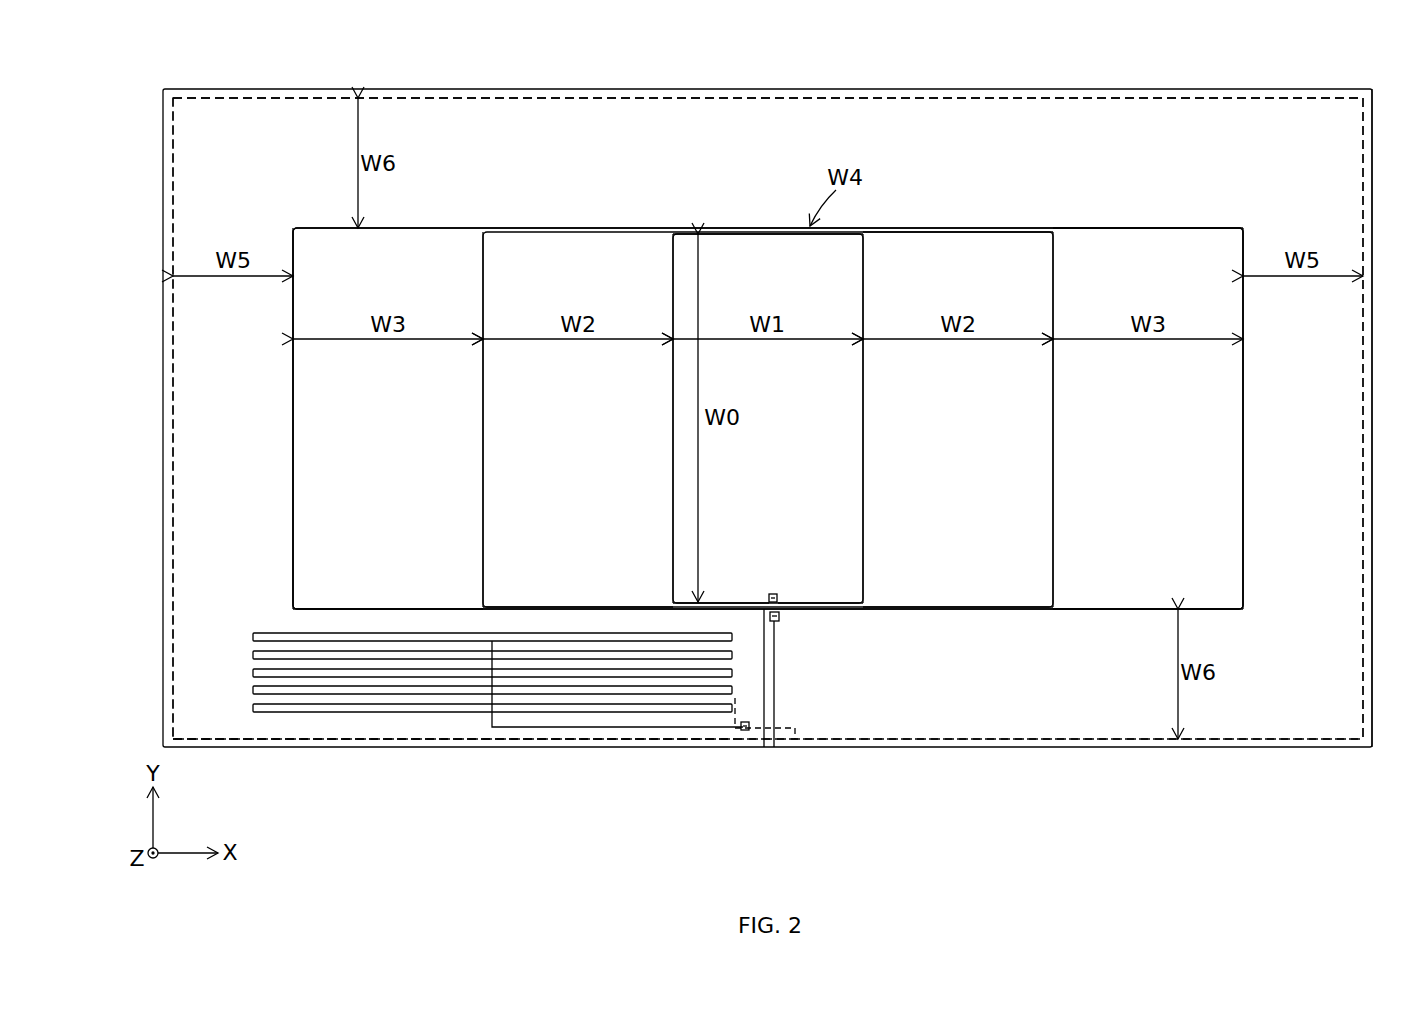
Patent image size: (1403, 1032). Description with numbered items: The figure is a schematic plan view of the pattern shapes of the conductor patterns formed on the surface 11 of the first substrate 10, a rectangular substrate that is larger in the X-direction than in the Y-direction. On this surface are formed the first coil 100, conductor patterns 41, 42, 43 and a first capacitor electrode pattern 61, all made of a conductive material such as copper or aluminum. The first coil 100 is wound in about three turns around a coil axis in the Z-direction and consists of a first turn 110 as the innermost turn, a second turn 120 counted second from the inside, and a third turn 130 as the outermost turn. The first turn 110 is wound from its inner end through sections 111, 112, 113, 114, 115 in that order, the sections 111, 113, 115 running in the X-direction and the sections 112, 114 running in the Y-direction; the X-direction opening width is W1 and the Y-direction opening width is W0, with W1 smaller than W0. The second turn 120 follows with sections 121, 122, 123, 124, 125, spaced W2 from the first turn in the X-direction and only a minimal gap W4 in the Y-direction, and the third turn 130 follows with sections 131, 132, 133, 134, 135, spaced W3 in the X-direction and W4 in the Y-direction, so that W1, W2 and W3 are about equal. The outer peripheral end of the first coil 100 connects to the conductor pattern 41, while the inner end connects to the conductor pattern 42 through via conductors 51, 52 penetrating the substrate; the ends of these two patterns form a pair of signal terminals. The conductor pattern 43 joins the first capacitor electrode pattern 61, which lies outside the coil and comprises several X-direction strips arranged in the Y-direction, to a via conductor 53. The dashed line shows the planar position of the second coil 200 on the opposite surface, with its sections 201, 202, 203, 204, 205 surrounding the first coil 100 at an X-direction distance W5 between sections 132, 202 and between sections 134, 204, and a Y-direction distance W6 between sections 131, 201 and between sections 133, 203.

The first substrate 10 is at (1347, 85).
The surface of the first substrate 11 is at (1250, 106).
The conductor pattern 41 is at (766, 662).
The conductor pattern 42 is at (776, 692).
The conductor pattern 43 is at (595, 728).
The via conductor 51 is at (773, 593).
The via conductor 52 is at (780, 618).
The via conductor 53 is at (745, 731).
The first capacitor electrode pattern 61 is at (249, 630).
The first coil 100 is at (1134, 184).
The first turn 110 is at (868, 491).
The section 111 is at (810, 602).
The section 112 is at (862, 405).
The section 113 is at (765, 235).
The section 114 is at (673, 453).
The section 115 is at (730, 602).
The second turn 120 is at (1058, 491).
The section 121 is at (958, 606).
The section 122 is at (1052, 405).
The section 123 is at (958, 233).
The section 124 is at (484, 407).
The section 125 is at (578, 606).
The third turn 130 is at (1252, 537).
The section 131 is at (1148, 608).
The section 132 is at (1242, 405).
The section 133 is at (1147, 230).
The section 134 is at (294, 407).
The section 135 is at (388, 608).
The second coil 200 is at (878, 97).
The section 201 is at (1000, 738).
The section 202 is at (1362, 418).
The section 203 is at (1003, 99).
The section 204 is at (174, 418).
The section 205 is at (425, 741).